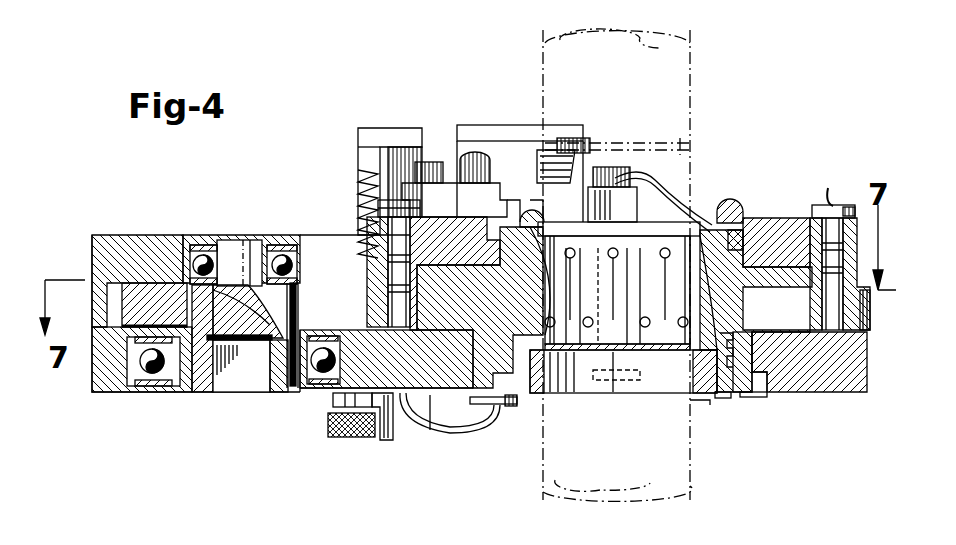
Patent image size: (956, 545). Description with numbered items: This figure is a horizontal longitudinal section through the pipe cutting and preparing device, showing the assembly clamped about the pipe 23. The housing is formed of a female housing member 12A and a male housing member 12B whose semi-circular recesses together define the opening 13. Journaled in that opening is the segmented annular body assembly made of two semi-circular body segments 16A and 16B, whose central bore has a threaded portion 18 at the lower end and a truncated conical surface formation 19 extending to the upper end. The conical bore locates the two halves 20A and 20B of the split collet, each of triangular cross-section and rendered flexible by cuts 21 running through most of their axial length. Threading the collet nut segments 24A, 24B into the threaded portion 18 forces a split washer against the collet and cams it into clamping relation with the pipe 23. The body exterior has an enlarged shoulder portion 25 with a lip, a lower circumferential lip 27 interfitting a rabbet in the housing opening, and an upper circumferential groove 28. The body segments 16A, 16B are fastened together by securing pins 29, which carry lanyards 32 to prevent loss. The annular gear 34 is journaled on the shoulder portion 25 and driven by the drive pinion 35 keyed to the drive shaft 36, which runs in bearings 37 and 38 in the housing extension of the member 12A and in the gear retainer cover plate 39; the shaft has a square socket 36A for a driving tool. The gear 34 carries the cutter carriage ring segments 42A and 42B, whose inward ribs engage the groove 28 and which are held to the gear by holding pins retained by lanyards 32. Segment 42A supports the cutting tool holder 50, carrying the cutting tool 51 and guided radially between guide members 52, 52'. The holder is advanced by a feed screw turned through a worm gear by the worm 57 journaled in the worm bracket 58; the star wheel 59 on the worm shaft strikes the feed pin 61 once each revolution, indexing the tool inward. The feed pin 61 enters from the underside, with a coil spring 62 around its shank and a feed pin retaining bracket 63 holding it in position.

The female housing member 12A is at (112, 392).
The male housing member 12B is at (840, 392).
The opening 13 is at (740, 393).
The annular body segment 16A is at (458, 397).
The annular body segment 16B is at (757, 397).
The threaded portion 18 is at (722, 398).
The truncated conical surface formation 19 is at (680, 228).
The collet half 20A is at (520, 300).
The collet half 20B is at (712, 302).
The cuts 21 is at (630, 344).
The pipe 23 is at (690, 78).
The collet nut segment 24A is at (515, 407).
The collet nut segment 24B is at (676, 412).
The enlarged diameter shoulder portion 25 is at (768, 218).
The circumferential lip 27 is at (768, 390).
The circumferential groove 28 is at (733, 208).
The securing pin 29 is at (475, 432).
The lanyard 32 is at (830, 200).
The annular gear 34 is at (870, 312).
The drive pinion 35 is at (145, 283).
The drive shaft 36 is at (195, 392).
The non-round socket 36A is at (232, 392).
The bearing 37 is at (300, 392).
The bearing 38 is at (206, 242).
The gear retainer cover plate 39 is at (125, 237).
The cutter carriage segment 42A is at (455, 273).
The cutter carriage segment 42B is at (815, 212).
The cutting tool holder 50 is at (500, 126).
The cutting tool 51 is at (578, 140).
The guide member 52 is at (454, 169).
The guide member 52' is at (623, 172).
The worm 57 is at (358, 186).
The worm bracket 58 is at (372, 128).
The star wheel 59 is at (348, 240).
The feed pin 61 is at (350, 440).
The coil spring 62 is at (333, 402).
The feed pin retaining bracket 63 is at (370, 440).